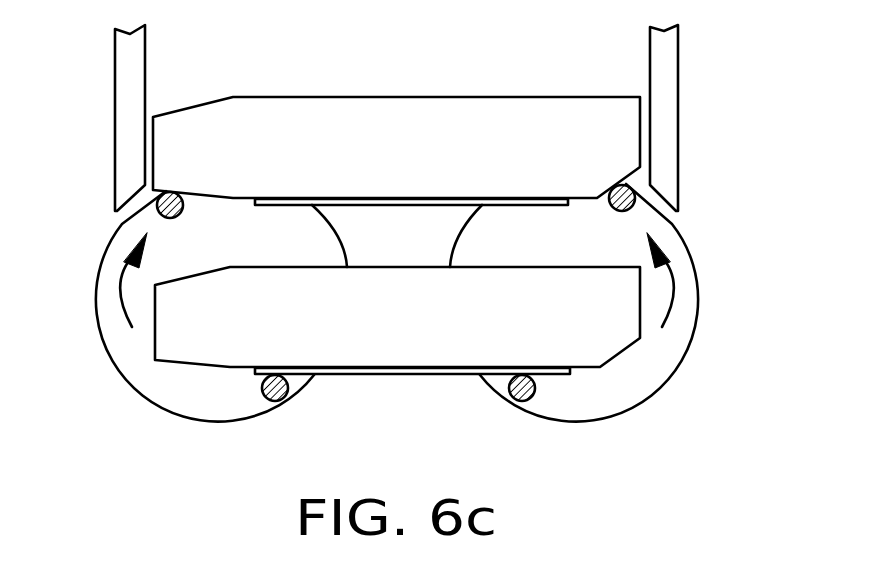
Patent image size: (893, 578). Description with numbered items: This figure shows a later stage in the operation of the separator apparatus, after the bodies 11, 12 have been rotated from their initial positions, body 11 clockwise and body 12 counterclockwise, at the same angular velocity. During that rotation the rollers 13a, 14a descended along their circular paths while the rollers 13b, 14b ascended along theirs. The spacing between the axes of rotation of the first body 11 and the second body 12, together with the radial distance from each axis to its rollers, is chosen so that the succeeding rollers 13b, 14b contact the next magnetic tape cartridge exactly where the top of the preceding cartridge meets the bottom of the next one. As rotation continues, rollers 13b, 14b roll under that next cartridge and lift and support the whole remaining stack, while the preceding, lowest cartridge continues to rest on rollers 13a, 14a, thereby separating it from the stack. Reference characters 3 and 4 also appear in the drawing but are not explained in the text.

The lower pole plate 3 is at (412, 386).
The upper pole plate 4 is at (441, 223).
The first body 11 is at (221, 407).
The second body 12 is at (610, 407).
The roller 13a is at (285, 398).
The roller 13b is at (158, 212).
The roller 14a is at (512, 398).
The roller 14b is at (633, 209).